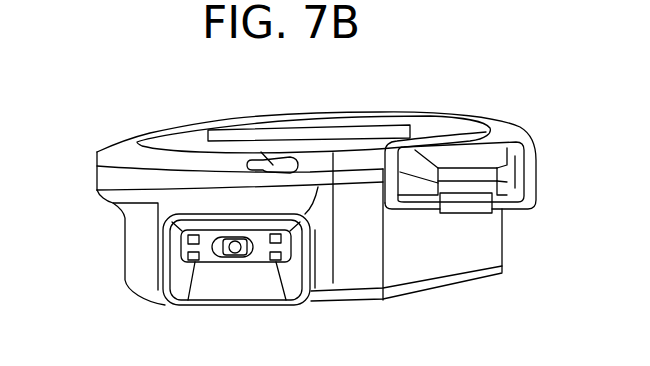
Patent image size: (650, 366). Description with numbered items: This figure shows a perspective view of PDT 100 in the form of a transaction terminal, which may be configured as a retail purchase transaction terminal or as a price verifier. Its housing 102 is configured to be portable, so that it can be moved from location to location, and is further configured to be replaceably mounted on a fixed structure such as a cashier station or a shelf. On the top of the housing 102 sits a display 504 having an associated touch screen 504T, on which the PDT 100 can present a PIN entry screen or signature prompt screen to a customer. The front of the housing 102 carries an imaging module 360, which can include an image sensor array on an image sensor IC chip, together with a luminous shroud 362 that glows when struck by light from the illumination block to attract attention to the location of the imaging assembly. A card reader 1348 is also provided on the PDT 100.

The PDT 100 is at (306, 200).
The housing 102 is at (118, 200).
The display 504 is at (313, 101).
The touch screen 504T is at (309, 133).
The luminous shroud 362 is at (335, 222).
The imaging module 360 is at (237, 266).
The card reader 1348 is at (478, 226).